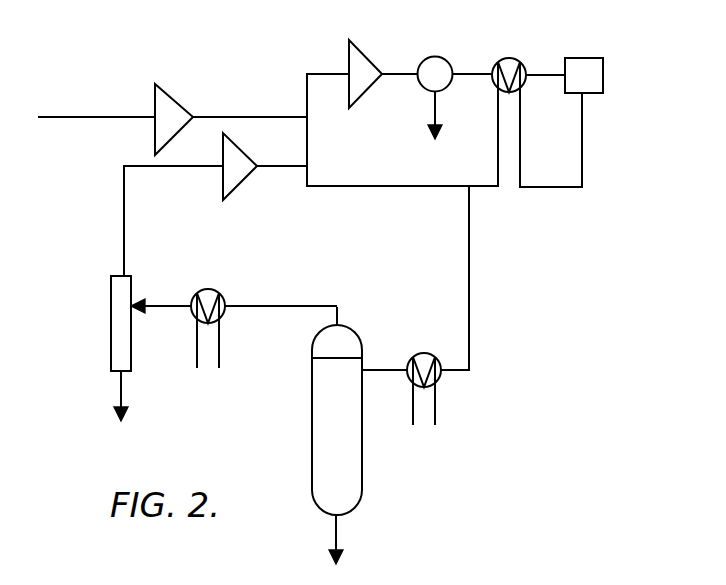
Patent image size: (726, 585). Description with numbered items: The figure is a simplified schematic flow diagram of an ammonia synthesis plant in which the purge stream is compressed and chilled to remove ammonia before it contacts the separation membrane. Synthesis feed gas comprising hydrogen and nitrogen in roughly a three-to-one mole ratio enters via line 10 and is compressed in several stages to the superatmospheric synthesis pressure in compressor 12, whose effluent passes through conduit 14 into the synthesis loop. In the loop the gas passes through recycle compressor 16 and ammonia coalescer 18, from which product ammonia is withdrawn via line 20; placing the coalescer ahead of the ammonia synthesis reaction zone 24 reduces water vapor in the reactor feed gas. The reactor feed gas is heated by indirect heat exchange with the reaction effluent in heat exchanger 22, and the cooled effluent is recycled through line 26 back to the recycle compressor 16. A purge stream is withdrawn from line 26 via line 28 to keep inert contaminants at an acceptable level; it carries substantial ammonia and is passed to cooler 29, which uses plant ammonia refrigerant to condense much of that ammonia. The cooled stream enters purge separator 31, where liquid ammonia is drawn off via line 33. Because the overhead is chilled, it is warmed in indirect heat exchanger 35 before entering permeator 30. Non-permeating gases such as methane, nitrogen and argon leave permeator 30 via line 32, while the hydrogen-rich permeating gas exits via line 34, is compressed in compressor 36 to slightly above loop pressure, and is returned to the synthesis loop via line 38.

The line 10 is at (85, 117).
The compressor 12 is at (163, 84).
The conduit 14 is at (233, 118).
The recycle compressor 16 is at (363, 50).
The ammonia coalescer 18 is at (435, 56).
The line 20 is at (435, 112).
The heat exchanger 22 is at (507, 58).
The ammonia synthesis reaction zone 24 is at (585, 58).
The line 26 is at (357, 186).
The line 28 is at (469, 250).
The cooler 29 is at (425, 353).
The permeator 30 is at (111, 332).
The purge separator 31 is at (311, 425).
The line 32 is at (118, 387).
The line 33 is at (336, 530).
The line 34 is at (122, 225).
The indirect heat exchanger 35 is at (207, 288).
The compressor 36 is at (222, 187).
The line 38 is at (282, 172).